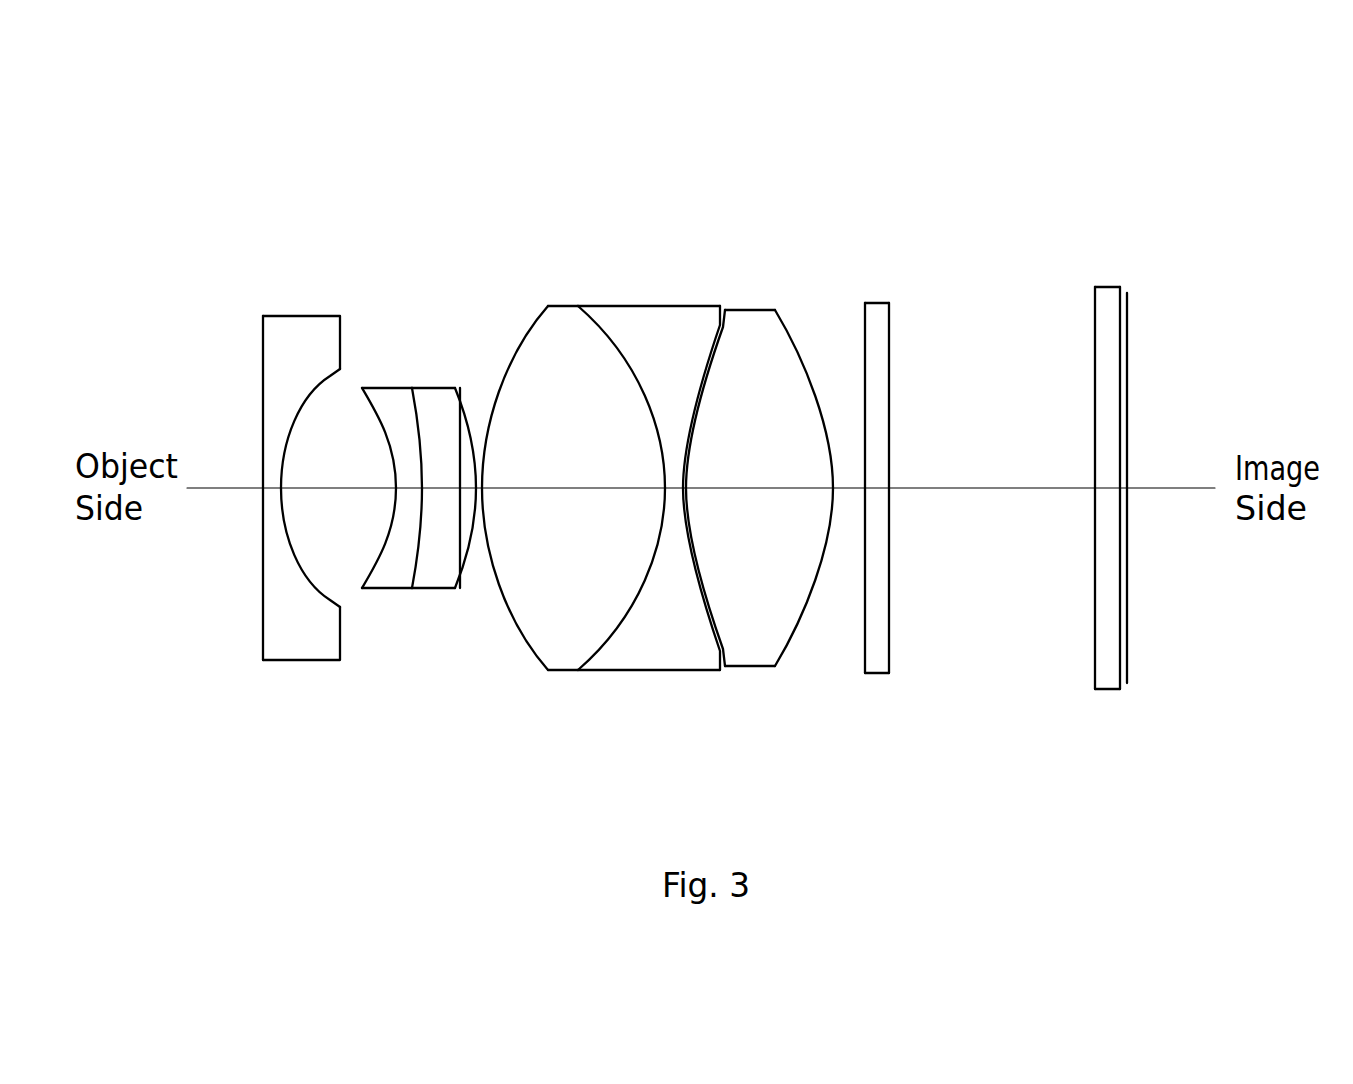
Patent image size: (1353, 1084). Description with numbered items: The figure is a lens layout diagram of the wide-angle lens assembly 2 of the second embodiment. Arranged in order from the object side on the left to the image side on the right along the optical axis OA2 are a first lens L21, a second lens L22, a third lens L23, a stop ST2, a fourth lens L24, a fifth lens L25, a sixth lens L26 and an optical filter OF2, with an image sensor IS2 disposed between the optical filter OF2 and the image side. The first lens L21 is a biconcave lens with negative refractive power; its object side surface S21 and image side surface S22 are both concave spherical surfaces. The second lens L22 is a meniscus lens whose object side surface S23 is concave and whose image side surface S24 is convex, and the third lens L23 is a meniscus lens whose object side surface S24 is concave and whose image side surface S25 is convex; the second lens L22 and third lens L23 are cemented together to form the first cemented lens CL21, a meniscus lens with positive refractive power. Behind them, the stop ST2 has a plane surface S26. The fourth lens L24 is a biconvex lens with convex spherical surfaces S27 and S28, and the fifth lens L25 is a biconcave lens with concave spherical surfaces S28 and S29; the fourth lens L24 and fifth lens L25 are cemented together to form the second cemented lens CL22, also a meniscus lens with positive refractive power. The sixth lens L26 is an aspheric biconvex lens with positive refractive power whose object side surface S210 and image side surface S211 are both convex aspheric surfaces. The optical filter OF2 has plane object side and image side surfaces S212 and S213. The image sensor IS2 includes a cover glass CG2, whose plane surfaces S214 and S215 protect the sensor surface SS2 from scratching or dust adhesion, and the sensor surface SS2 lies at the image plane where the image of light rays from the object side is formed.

The wide-angle lens assembly 2 is at (110, 130).
The optical axis OA2 is at (205, 490).
The first lens L21 is at (262, 489).
The second lens L22 is at (364, 520).
The third lens L23 is at (439, 490).
The fourth lens L24 is at (573, 505).
The fifth lens L25 is at (649, 513).
The sixth lens L26 is at (759, 524).
The first cemented lens CL21 is at (447, 199).
The second cemented lens CL22 is at (660, 202).
The stop ST2 is at (480, 499).
The optical filter OF2 is at (907, 506).
The image sensor IS2 is at (1280, 183).
The cover glass CG2 is at (1093, 502).
The sensor surface SS2 is at (1215, 439).
The object side surface of the first lens S21 is at (263, 607).
The image side surface of the first lens S22 is at (303, 572).
The object side surface of the second lens S23 is at (378, 585).
The cemented surface of the second and third lenses S24 is at (413, 586).
The image side surface of the third lens S25 is at (455, 588).
The stop surface S26 is at (460, 588).
The object side surface of the fourth lens S27 is at (510, 600).
The cemented surface of the fourth and fifth lenses S28 is at (647, 610).
The image side surface of the fifth lens S29 is at (697, 600).
The object side surface of the sixth lens S210 is at (715, 623).
The image side surface of the sixth lens S211 is at (812, 600).
The object side surface of the optical filter S212 is at (865, 608).
The image side surface of the optical filter S213 is at (888, 615).
The surface of the cover glass S214 is at (1095, 598).
The surface of the cover glass S215 is at (1125, 633).